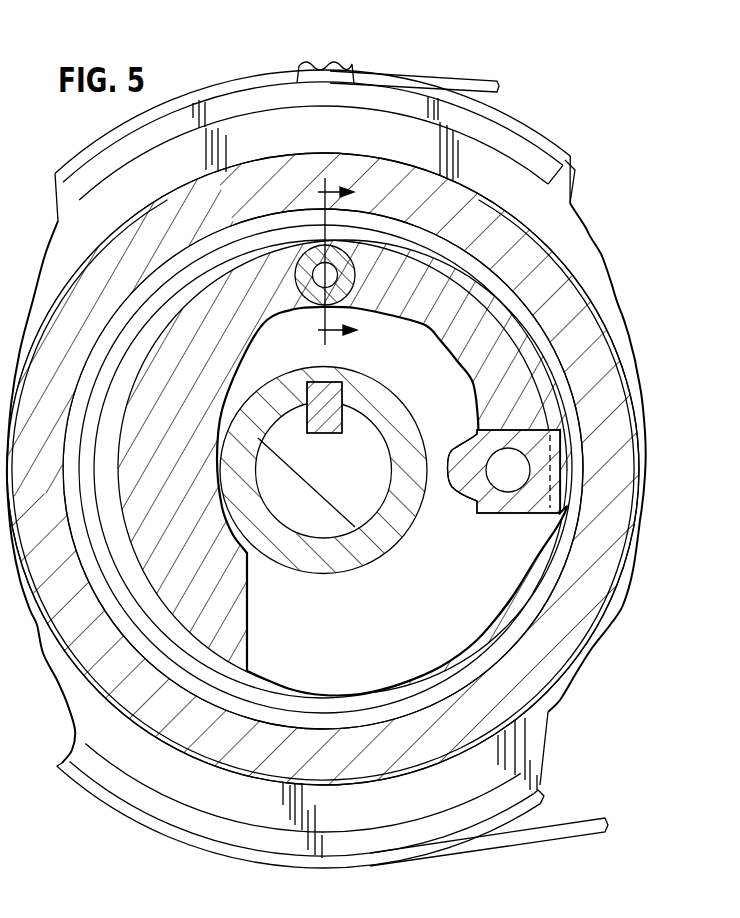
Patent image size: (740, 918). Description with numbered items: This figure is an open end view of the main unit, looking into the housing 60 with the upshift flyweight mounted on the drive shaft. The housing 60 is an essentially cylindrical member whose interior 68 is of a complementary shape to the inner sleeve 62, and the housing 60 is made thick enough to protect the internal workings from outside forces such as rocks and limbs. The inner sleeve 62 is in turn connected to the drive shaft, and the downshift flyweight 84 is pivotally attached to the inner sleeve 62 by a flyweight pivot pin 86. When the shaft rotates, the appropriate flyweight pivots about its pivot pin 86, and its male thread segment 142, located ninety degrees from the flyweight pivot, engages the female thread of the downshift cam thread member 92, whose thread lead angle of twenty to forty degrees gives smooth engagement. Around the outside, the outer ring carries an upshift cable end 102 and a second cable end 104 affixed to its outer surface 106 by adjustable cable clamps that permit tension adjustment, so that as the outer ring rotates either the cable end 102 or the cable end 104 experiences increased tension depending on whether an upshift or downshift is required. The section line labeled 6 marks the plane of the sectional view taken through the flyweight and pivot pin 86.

The housing 60 is at (580, 620).
The inner sleeve 62 is at (433, 370).
The interior 68 is at (600, 336).
The downshift flyweight 84 is at (160, 355).
The flyweight pivot pin 86 is at (455, 172).
The downshift cam thread member 92 is at (495, 633).
The cable end 102 is at (446, 78).
The lower strap 104 is at (588, 820).
The outer surface 106 is at (553, 172).
The male thread segment 142 is at (572, 450).
The section line 6- 6 is at (352, 259).